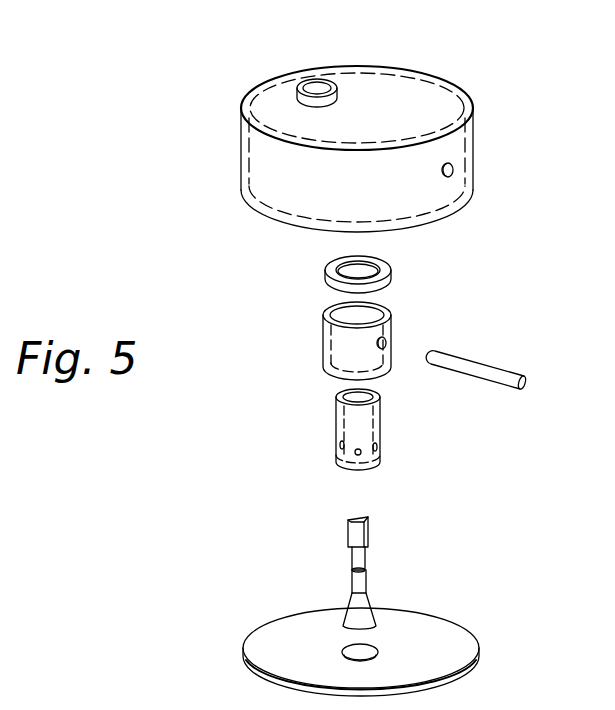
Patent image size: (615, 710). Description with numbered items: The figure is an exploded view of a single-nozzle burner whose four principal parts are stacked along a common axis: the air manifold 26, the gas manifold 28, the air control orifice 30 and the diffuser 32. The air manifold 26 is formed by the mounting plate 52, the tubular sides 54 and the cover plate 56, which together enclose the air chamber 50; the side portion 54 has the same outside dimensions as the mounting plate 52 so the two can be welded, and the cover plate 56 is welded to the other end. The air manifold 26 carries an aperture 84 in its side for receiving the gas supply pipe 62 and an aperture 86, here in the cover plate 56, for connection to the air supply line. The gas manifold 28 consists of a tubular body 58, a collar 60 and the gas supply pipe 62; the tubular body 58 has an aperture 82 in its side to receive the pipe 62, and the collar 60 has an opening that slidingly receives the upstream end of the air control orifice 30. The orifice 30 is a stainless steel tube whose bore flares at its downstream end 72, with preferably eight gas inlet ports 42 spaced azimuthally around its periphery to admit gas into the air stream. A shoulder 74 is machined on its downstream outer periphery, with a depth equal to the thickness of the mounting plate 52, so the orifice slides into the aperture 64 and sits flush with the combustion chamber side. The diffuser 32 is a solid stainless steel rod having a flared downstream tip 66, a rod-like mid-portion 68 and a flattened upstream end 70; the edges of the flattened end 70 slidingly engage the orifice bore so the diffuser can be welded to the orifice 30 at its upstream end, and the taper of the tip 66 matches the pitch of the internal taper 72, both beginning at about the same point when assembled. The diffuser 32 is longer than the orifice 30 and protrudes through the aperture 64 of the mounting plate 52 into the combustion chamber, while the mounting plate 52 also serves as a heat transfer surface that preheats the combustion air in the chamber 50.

The air manifold 26 is at (348, 133).
The gas manifold 28 is at (362, 318).
The air control orifice 30 is at (366, 436).
The diffuser 32 is at (368, 573).
The gas inlet ports 42 is at (380, 447).
The air chamber 50 is at (352, 652).
The mounting plate 52 is at (466, 631).
The tubular sides 54 is at (241, 192).
The cover plate 56 is at (393, 85).
The tubular body 58 is at (323, 337).
The collar 60 is at (326, 276).
The gas supply pipe 62 is at (493, 363).
The aperture 64 is at (370, 651).
The flared downstream tip 66 is at (375, 603).
The rod-like mid-portion 68 is at (350, 580).
The flattened upstream end 70 is at (370, 532).
The downstream end 72 is at (345, 455).
The shoulder 74 is at (372, 463).
The aperture 82 is at (387, 343).
The aperture 84 is at (454, 170).
The aperture 86 is at (317, 78).